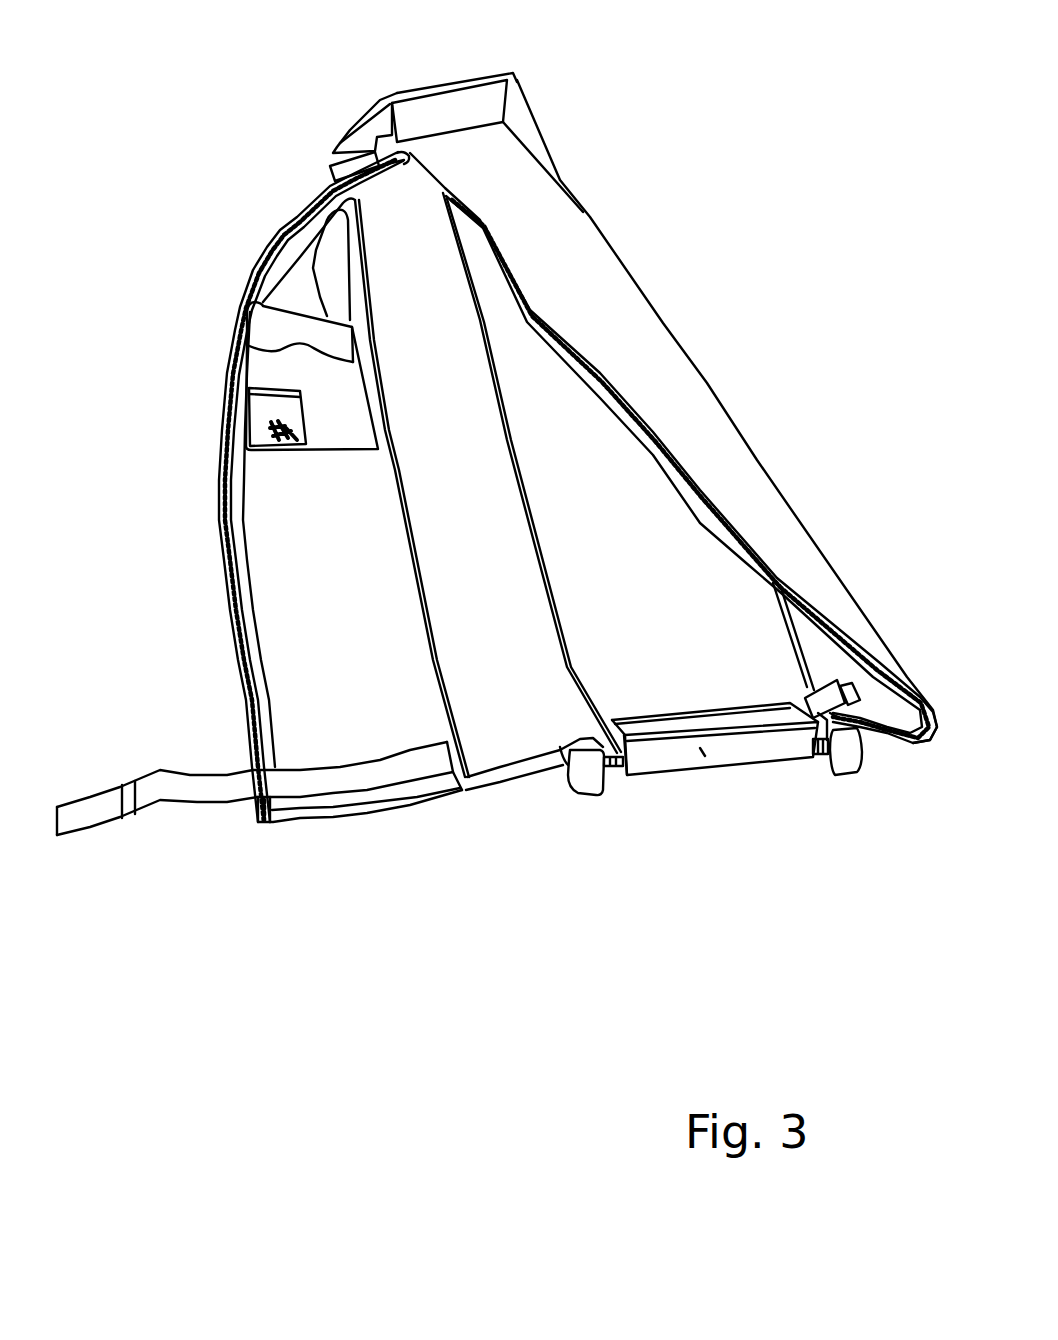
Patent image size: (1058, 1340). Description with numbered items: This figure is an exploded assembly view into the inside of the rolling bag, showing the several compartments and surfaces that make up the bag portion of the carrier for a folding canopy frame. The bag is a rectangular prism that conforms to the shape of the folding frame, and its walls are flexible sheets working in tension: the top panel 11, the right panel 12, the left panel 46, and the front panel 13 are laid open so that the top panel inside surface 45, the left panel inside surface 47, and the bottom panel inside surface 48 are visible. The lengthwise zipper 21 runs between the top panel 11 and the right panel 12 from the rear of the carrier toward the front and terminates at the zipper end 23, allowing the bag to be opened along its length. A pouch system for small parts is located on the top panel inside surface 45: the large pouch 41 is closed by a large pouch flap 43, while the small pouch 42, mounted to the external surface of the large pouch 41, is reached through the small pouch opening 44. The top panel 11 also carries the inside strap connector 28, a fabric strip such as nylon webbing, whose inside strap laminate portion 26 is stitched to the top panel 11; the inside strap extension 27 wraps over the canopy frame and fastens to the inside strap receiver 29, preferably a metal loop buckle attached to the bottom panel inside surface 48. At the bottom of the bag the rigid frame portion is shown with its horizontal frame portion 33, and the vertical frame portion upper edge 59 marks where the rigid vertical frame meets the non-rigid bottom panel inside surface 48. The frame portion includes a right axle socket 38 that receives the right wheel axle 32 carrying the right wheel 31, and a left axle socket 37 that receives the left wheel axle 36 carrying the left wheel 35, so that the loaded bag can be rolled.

The top panel 11 is at (268, 553).
The right panel 12 is at (647, 350).
The front panel 13 is at (443, 87).
The lengthwise zipper 21 is at (221, 472).
The zipper end 23 is at (390, 100).
The inside strap laminate portion 26 is at (340, 777).
The inside strap extension 27 is at (83, 810).
The inside strap connector 28 is at (127, 797).
The inside strap receiver 29 is at (922, 747).
The right wheel 31 is at (848, 763).
The right wheel axle 32 is at (822, 754).
The horizontal frame portion 33 is at (705, 753).
The left wheel 35 is at (583, 783).
The left wheel axle 36 is at (618, 767).
The left axle socket 37 is at (635, 758).
The right axle socket 38 is at (765, 747).
The large pouch 41 is at (302, 362).
The small pouch 42 is at (262, 428).
The large pouch flap 43 is at (263, 330).
The small pouch opening 44 is at (276, 388).
The top panel inside surface 45 is at (368, 795).
The left panel 46 is at (500, 728).
The left panel inside surface 47 is at (497, 540).
The bottom panel inside surface 48 is at (517, 347).
The vertical frame portion upper edge 59 is at (658, 713).